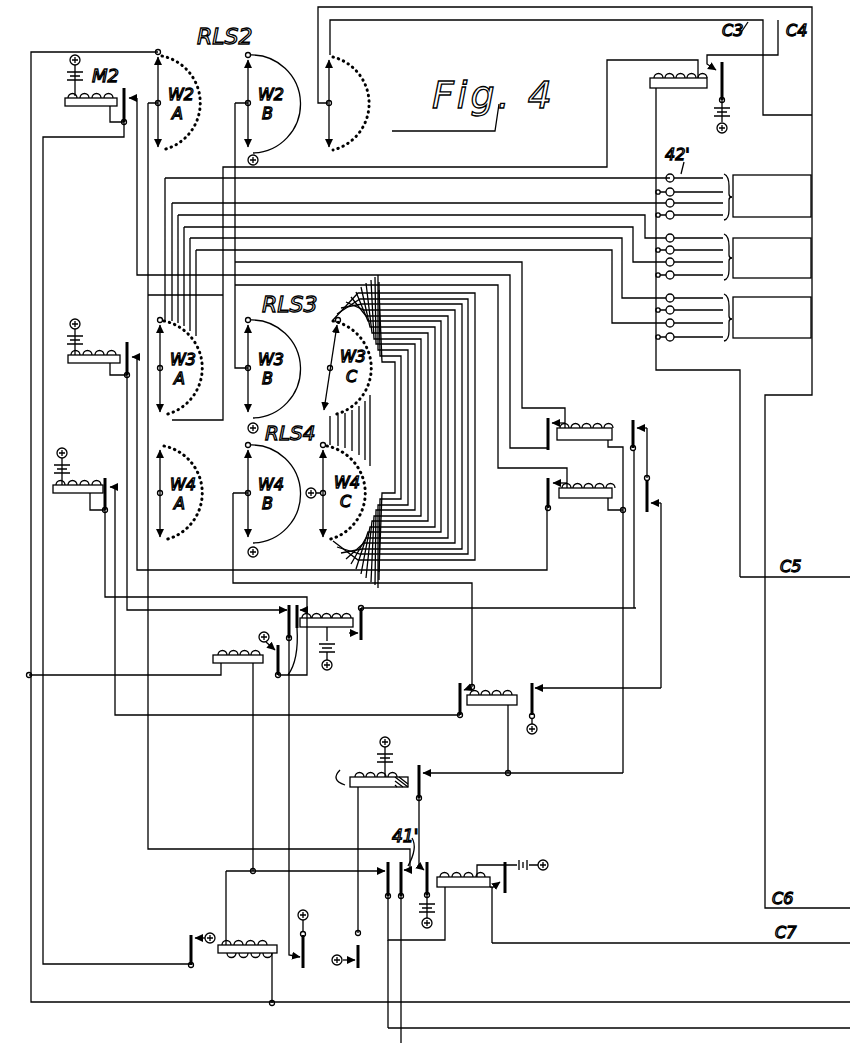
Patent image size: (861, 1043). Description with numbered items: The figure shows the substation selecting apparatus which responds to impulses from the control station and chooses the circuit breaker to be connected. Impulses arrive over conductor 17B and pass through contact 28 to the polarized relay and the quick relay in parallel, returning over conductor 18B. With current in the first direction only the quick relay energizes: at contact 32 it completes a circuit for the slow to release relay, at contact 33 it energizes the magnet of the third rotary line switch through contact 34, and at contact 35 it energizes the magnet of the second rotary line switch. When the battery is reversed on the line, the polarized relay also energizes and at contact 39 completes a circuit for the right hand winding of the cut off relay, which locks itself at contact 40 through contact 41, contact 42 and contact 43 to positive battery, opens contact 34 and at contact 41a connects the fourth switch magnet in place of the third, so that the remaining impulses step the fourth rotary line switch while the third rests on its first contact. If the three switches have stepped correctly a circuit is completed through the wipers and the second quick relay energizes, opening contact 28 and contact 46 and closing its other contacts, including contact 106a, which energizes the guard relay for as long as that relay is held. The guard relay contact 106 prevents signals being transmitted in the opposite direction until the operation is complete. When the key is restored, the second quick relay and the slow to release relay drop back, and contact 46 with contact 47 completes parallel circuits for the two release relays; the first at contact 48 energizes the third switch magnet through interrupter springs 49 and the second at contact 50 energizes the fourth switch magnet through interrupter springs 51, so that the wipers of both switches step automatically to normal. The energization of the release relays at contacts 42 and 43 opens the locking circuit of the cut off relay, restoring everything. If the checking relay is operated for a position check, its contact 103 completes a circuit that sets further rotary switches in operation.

The contact of relay QR9 103 is at (712, 62).
The contact of relay QR4 106 is at (331, 53).
The contact of relay RR4 43 is at (692, 178).
The interrupter springs of magnet M3 49 is at (136, 326).
The interrupter springs of magnet M4 51 is at (118, 462).
The contact in locking circuit of relay COR1 41 is at (640, 426).
The contact of relay RR3 42 is at (655, 503).
The contact of relay RR3 48 is at (548, 482).
The contact of relay COR1 40 is at (355, 636).
The contact of relay COR1 34 is at (286, 606).
The contact of relay COR1 41a is at (300, 672).
The contact of polarized relay PR1 39 is at (270, 668).
The contact of relay RR4 50 is at (470, 682).
The contact of slow to release relay SR4 47 is at (422, 770).
The contact of relay QR3 32 is at (345, 967).
The contact of relay QR4 28 is at (383, 874).
The contact of relay QR4 46 is at (428, 866).
The contact of relay QR4 106a is at (503, 892).
The contact of relay QR3 35 is at (198, 934).
The contact of relay QR3 33 is at (298, 960).
The conductor 18B is at (690, 1002).
The conductor 17B is at (738, 992).